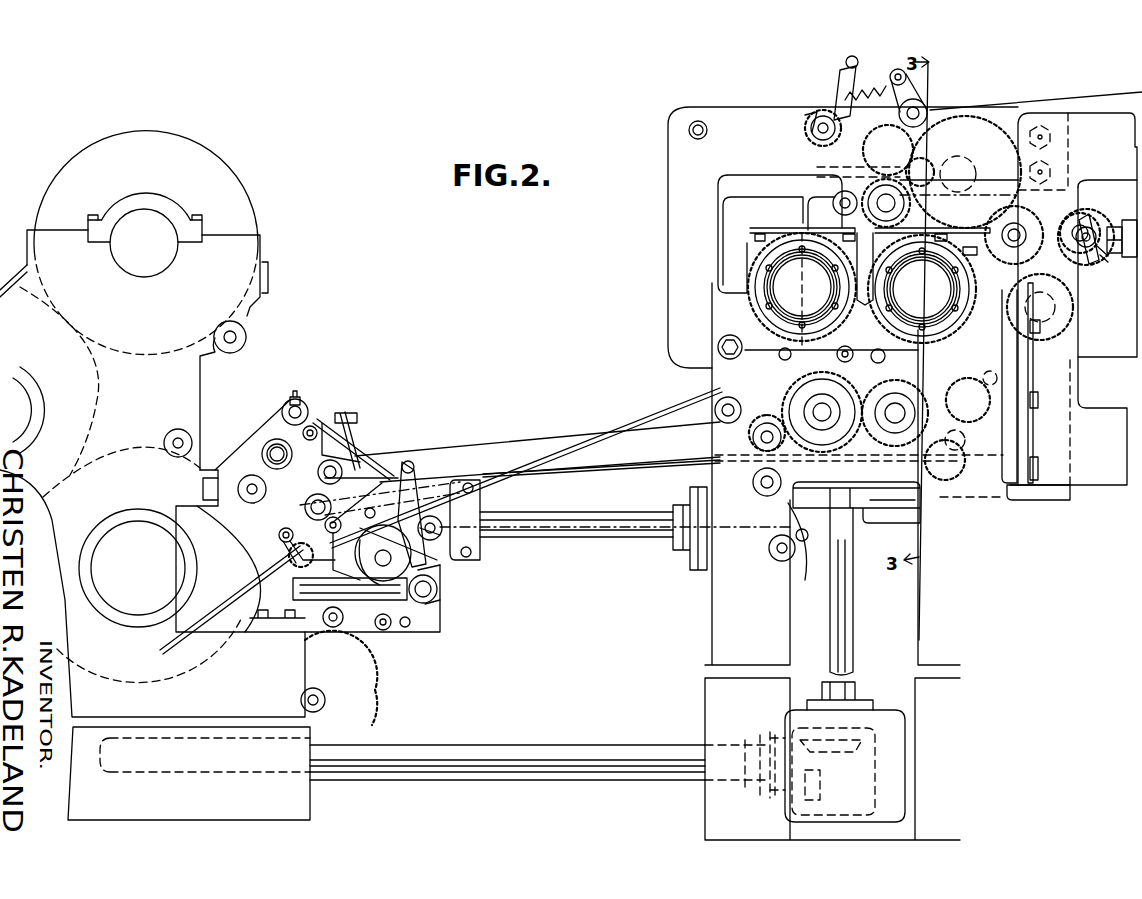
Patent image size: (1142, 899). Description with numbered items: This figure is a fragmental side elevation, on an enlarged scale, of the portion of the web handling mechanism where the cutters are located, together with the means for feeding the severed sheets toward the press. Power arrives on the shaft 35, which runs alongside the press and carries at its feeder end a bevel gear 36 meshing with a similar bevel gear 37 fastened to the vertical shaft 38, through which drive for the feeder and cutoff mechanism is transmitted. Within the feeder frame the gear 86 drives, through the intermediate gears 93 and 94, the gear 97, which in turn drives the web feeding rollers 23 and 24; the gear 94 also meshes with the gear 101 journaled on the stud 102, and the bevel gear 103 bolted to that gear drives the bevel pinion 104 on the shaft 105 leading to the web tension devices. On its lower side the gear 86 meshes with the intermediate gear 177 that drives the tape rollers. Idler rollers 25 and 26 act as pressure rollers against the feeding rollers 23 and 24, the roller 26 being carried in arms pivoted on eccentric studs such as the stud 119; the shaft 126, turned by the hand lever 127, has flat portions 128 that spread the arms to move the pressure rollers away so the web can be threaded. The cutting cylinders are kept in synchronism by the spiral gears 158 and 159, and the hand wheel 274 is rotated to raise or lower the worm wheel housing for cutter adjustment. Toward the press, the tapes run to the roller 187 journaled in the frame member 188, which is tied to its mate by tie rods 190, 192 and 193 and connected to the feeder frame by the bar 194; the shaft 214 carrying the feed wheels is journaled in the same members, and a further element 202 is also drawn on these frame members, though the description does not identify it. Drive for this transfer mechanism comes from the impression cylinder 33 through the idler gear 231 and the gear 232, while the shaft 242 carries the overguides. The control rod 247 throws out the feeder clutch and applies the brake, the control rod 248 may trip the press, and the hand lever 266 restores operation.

The impression cylinder 33 is at (162, 475).
The shaft 242 is at (192, 443).
The shaft 214 is at (262, 454).
The tie rod 192 is at (266, 489).
The tie rod 193 is at (305, 407).
The bolt 202 is at (318, 474).
The roller 187 is at (331, 505).
The hand lever 266 is at (418, 472).
The control rod 247 is at (655, 420).
The bar 194 is at (605, 520).
The tie rod 190 is at (375, 626).
The gear 232 is at (352, 636).
The idler gear 231 is at (358, 720).
The frame member 188 is at (440, 626).
The control rod 248 is at (176, 642).
The shaft 35 is at (548, 750).
The hand lever 127 is at (836, 96).
The flat portions 128 is at (812, 132).
The shaft 126 is at (815, 138).
The web feeding roller 23 is at (901, 98).
The gear 97 is at (985, 140).
The spiral gear 159 is at (780, 238).
The idler roller 26 is at (822, 236).
The web feeding roller 24 is at (922, 280).
The idler roller 25 is at (940, 205).
The spiral gear 158 is at (970, 247).
The intermediate gear 94 is at (1021, 228).
The intermediate gear 93 is at (1080, 300).
The gear 86 is at (1040, 320).
The bevel gear 103 is at (1092, 214).
The shaft 105 is at (1128, 220).
The gear 101 is at (1086, 255).
The bevel pinion 104 is at (1114, 253).
The stud 102 is at (1108, 262).
The intermediate gear 177 is at (1016, 391).
The stud 119 is at (905, 481).
The hand wheel 274 is at (880, 523).
The vertical shaft 38 is at (853, 622).
The bevel gear 37 is at (845, 752).
The bevel gear 36 is at (812, 806).